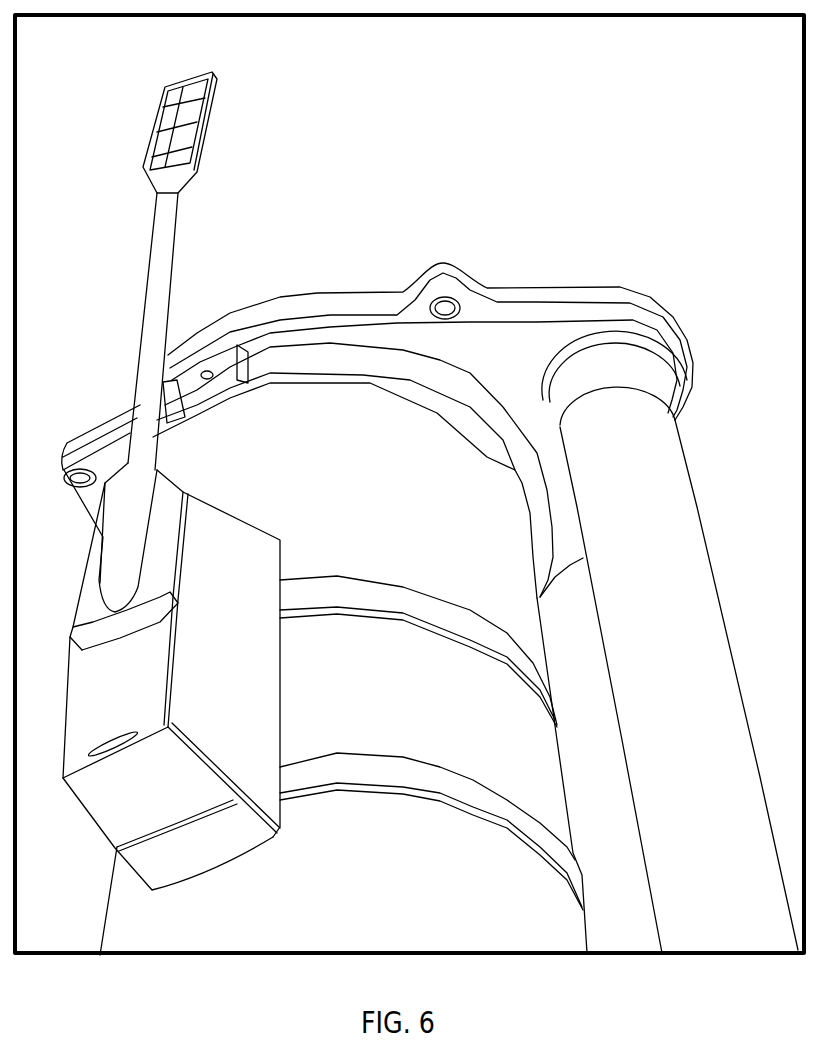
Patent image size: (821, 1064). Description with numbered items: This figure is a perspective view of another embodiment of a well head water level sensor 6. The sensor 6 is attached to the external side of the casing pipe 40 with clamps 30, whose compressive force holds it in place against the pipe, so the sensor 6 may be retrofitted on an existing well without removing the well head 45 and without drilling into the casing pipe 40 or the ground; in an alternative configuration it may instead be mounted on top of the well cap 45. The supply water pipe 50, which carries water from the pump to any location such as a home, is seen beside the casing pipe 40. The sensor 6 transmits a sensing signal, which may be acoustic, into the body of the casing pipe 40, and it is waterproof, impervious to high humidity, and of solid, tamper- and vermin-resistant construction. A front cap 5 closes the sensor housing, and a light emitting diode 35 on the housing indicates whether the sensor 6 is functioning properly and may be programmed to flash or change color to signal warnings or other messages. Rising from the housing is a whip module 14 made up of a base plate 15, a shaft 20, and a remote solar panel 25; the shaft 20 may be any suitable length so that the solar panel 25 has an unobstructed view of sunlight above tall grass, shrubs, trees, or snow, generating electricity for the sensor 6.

The front cap 5 is at (242, 540).
The well head water level sensor 6 is at (62, 593).
The whip module 14 is at (87, 257).
The base plate 15 is at (195, 491).
The shaft 20 is at (167, 303).
The solar panel 25 is at (210, 105).
The clamps 30 is at (422, 778).
The light emitting diode 35 is at (108, 742).
The casing pipe 40 is at (125, 917).
The well head 45 is at (527, 287).
The supply water pipe 50 is at (717, 588).